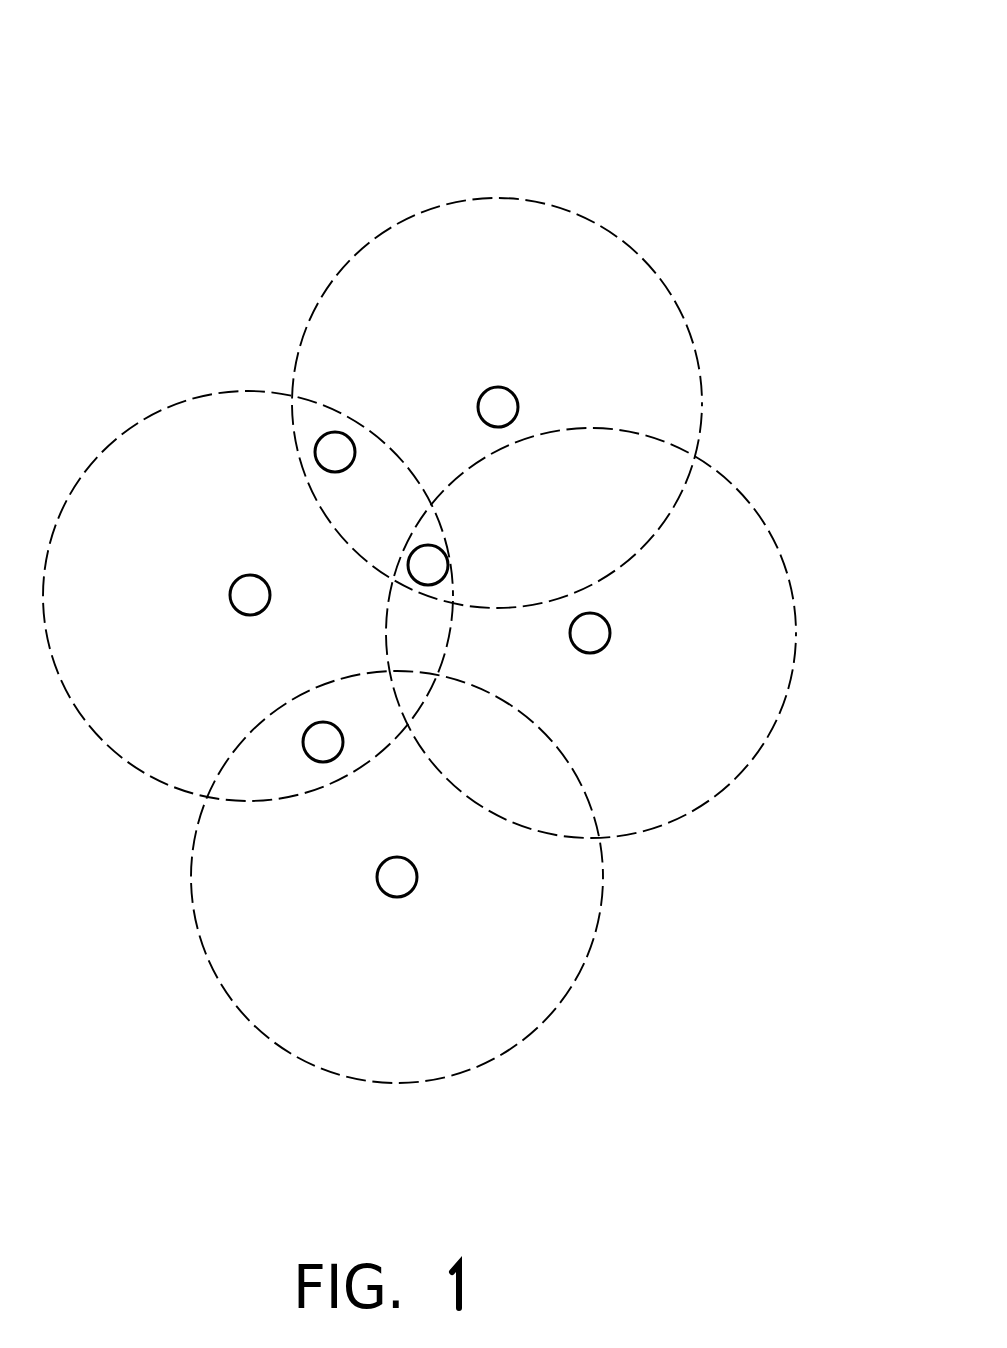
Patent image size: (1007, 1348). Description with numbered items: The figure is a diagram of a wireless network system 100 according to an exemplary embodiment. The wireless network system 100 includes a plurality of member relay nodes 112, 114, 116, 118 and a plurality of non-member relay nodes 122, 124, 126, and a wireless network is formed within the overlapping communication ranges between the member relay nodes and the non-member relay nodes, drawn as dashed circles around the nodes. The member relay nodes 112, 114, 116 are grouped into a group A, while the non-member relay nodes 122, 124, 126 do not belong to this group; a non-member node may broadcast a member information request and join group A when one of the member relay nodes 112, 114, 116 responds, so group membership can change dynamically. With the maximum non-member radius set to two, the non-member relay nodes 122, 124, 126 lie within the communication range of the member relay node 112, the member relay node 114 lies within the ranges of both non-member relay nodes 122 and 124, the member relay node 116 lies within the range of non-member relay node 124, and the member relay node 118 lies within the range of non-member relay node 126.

The wireless network system 100 is at (826, 36).
The member relay node 112 is at (250, 575).
The member relay node 114 is at (498, 387).
The member relay node 116 is at (611, 641).
The member relay node 118 is at (397, 897).
The non-member relay node 122 is at (338, 432).
The non-member relay node 124 is at (412, 582).
The non-member relay node 126 is at (302, 742).